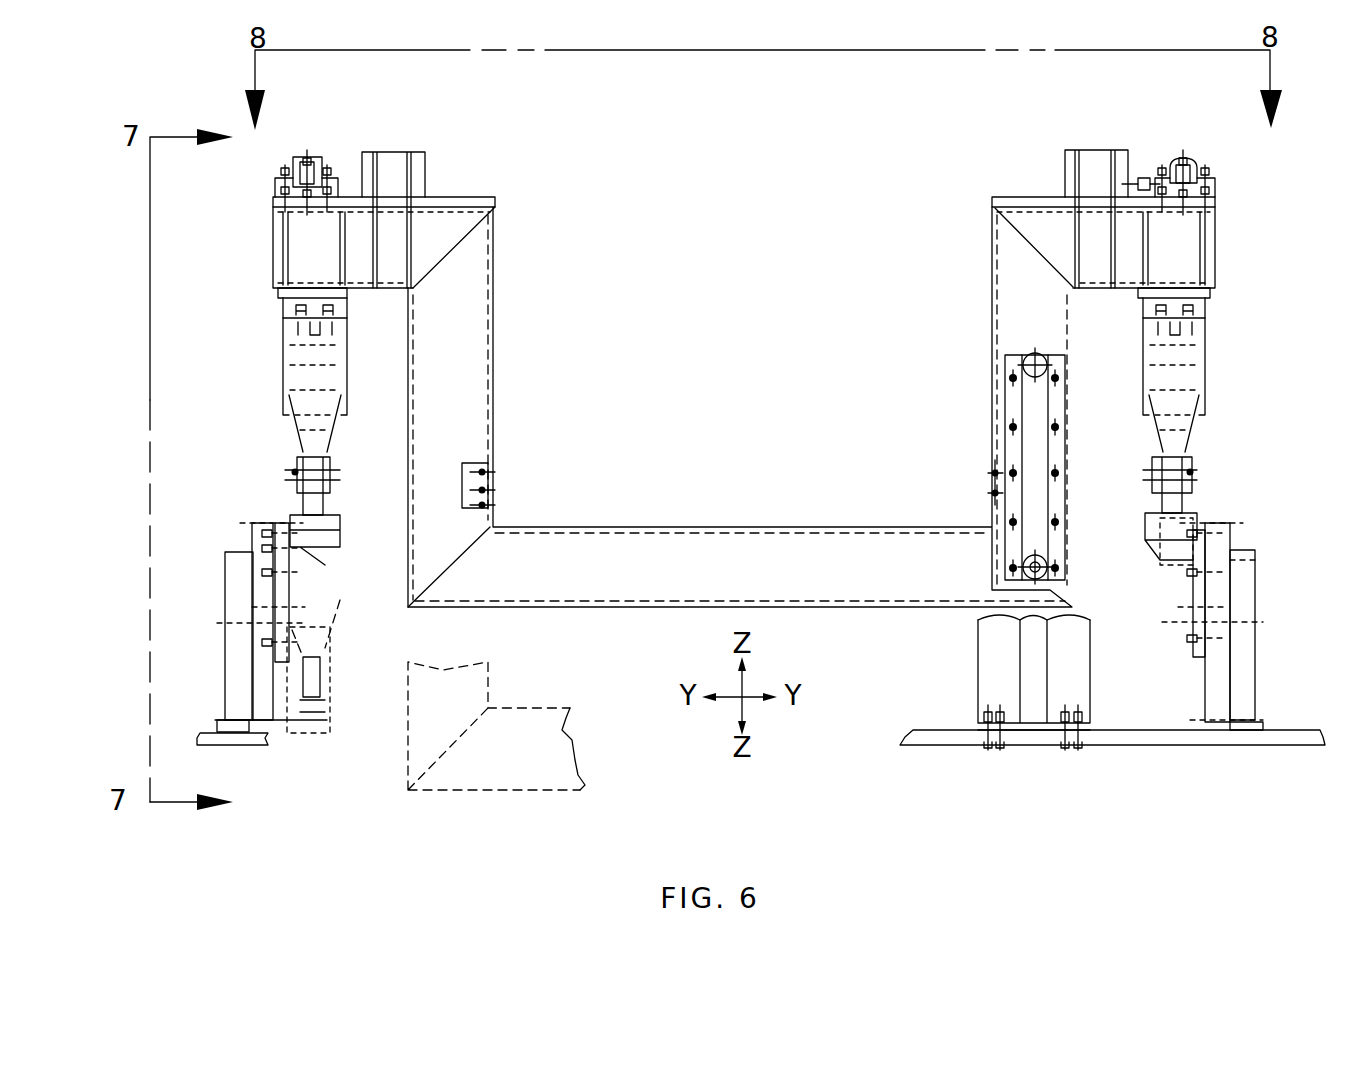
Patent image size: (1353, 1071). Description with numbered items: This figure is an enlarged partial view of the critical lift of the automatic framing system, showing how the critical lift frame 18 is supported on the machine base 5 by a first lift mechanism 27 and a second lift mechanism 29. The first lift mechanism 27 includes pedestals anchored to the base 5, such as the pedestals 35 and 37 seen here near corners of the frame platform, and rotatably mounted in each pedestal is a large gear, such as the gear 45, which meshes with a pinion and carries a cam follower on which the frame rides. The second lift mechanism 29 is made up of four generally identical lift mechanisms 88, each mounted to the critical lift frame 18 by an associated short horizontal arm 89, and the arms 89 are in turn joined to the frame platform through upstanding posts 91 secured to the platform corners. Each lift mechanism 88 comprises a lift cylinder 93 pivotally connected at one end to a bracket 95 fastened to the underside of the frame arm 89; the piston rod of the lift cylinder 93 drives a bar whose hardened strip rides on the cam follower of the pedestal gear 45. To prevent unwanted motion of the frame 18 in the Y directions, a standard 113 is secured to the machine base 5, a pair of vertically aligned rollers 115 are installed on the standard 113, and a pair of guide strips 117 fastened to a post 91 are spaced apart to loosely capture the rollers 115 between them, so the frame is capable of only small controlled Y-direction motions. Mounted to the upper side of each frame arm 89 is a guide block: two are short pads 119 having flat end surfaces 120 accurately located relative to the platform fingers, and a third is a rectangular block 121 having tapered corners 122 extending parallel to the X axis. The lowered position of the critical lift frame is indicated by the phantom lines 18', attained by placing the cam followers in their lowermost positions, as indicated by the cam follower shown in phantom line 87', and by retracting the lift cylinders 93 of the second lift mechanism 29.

The machine base 5 is at (1122, 738).
The critical lift frame 18 is at (740, 407).
The critical lift frame in lowered position 18' is at (504, 717).
The first lift mechanism 27 is at (233, 546).
The second lift mechanism 29 is at (1207, 373).
The pedestal 35 is at (1243, 642).
The pedestal 37 is at (237, 678).
The gear 45 is at (258, 659).
The cam follower in lowermost position 87' is at (331, 696).
The lift mechanism 88 is at (281, 314).
The horizontal arm 89 is at (1048, 228).
The upstanding post 91 is at (1022, 282).
The lift cylinder 93 is at (283, 410).
The bracket 95 is at (295, 350).
The standard 113 is at (1032, 700).
The roller 115 is at (1060, 575).
The guide strip 117 is at (1058, 448).
The pad 119 is at (316, 170).
The end surface 120 is at (297, 157).
The rectangular block 121 is at (1190, 173).
The tapered corner 122 is at (1175, 153).